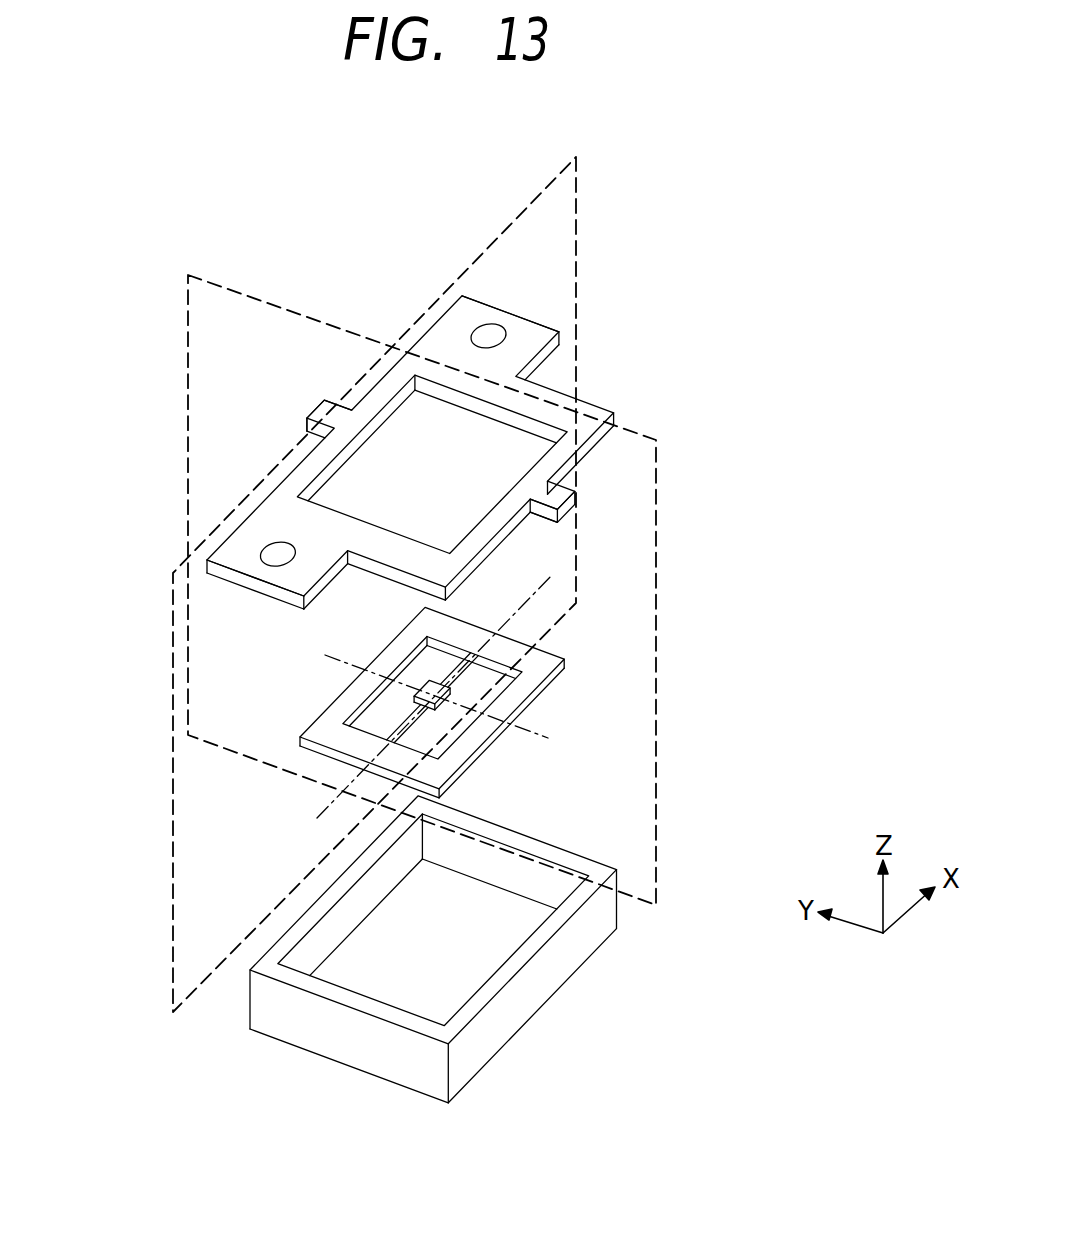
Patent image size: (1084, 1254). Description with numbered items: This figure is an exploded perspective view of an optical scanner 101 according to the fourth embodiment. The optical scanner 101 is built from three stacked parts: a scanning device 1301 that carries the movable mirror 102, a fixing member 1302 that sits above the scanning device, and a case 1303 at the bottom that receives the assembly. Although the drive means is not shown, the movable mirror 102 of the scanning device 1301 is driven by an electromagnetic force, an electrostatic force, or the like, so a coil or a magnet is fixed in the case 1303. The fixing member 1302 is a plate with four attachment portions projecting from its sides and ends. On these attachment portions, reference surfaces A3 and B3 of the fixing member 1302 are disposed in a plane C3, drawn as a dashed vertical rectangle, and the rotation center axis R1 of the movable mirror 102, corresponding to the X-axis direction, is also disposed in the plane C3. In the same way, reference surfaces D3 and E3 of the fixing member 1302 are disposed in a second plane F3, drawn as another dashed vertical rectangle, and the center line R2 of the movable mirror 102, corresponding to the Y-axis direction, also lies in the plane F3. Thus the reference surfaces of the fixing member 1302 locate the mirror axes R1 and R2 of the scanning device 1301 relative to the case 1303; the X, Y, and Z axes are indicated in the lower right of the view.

The optical scanner 101 is at (700, 190).
The movable mirror 102 is at (457, 697).
The scanning device 1301 is at (540, 665).
The fixing member 1302 is at (598, 412).
The case 1303 is at (553, 978).
The reference surface A3 is at (548, 353).
The reference surface B3 is at (312, 580).
The plane C3 is at (200, 810).
The reference surface D3 is at (304, 415).
The reference surface E3 is at (552, 527).
The plane F3 is at (207, 428).
The rotation center axis R1 is at (520, 612).
The center line R2 is at (550, 740).